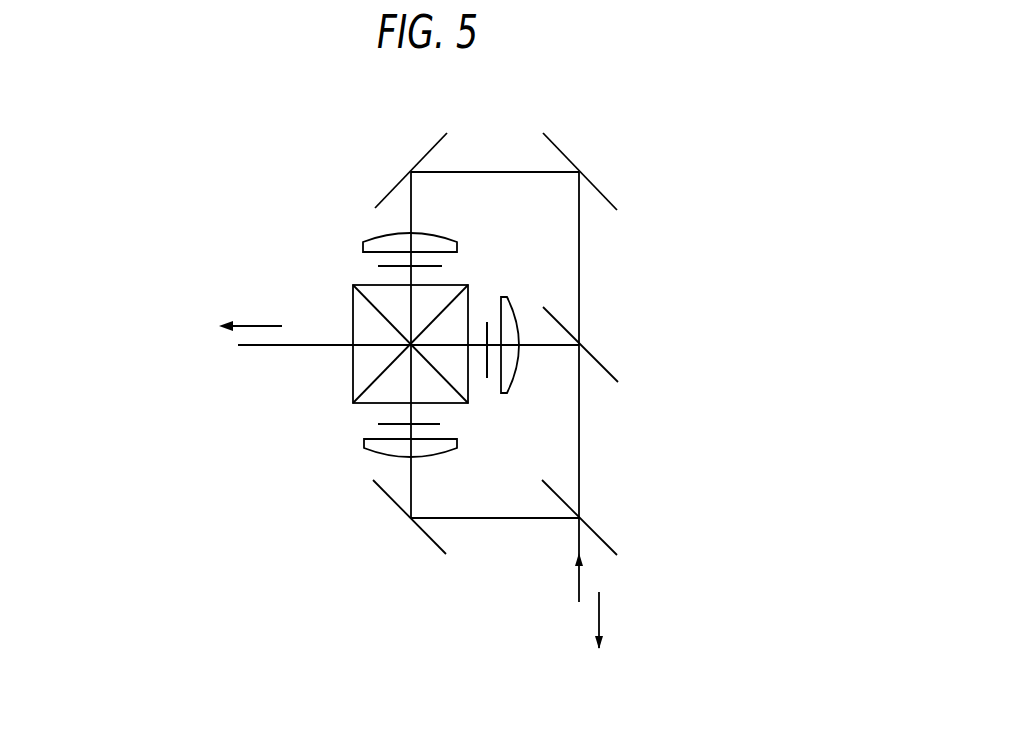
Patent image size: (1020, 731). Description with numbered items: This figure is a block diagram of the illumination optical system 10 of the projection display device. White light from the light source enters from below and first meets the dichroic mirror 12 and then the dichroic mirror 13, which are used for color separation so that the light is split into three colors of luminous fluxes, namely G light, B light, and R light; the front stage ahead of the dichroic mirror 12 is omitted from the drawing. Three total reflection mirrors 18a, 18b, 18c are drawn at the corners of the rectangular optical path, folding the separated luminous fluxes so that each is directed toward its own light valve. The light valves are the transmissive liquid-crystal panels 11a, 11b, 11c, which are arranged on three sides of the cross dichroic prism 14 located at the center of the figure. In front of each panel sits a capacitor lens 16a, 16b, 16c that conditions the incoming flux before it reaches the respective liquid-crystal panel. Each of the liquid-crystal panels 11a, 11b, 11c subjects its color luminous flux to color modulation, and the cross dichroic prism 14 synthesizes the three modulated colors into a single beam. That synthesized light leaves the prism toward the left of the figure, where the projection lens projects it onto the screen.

The illumination optical system 10 is at (299, 133).
The transmissive liquid-crystal panel 11a is at (437, 424).
The transmissive liquid-crystal panel 11b is at (487, 320).
The transmissive liquid-crystal panel 11c is at (380, 268).
The dichroic mirror 12 is at (607, 543).
The dichroic mirror 13 is at (607, 370).
The cross dichroic prism 14 is at (355, 386).
The capacitor lens 16a is at (439, 452).
The capacitor lens 16b is at (511, 392).
The capacitor lens 16c is at (448, 240).
The total reflection mirror 18a is at (421, 531).
The total reflection mirror 18b is at (604, 196).
The total reflection mirror 18c is at (383, 200).